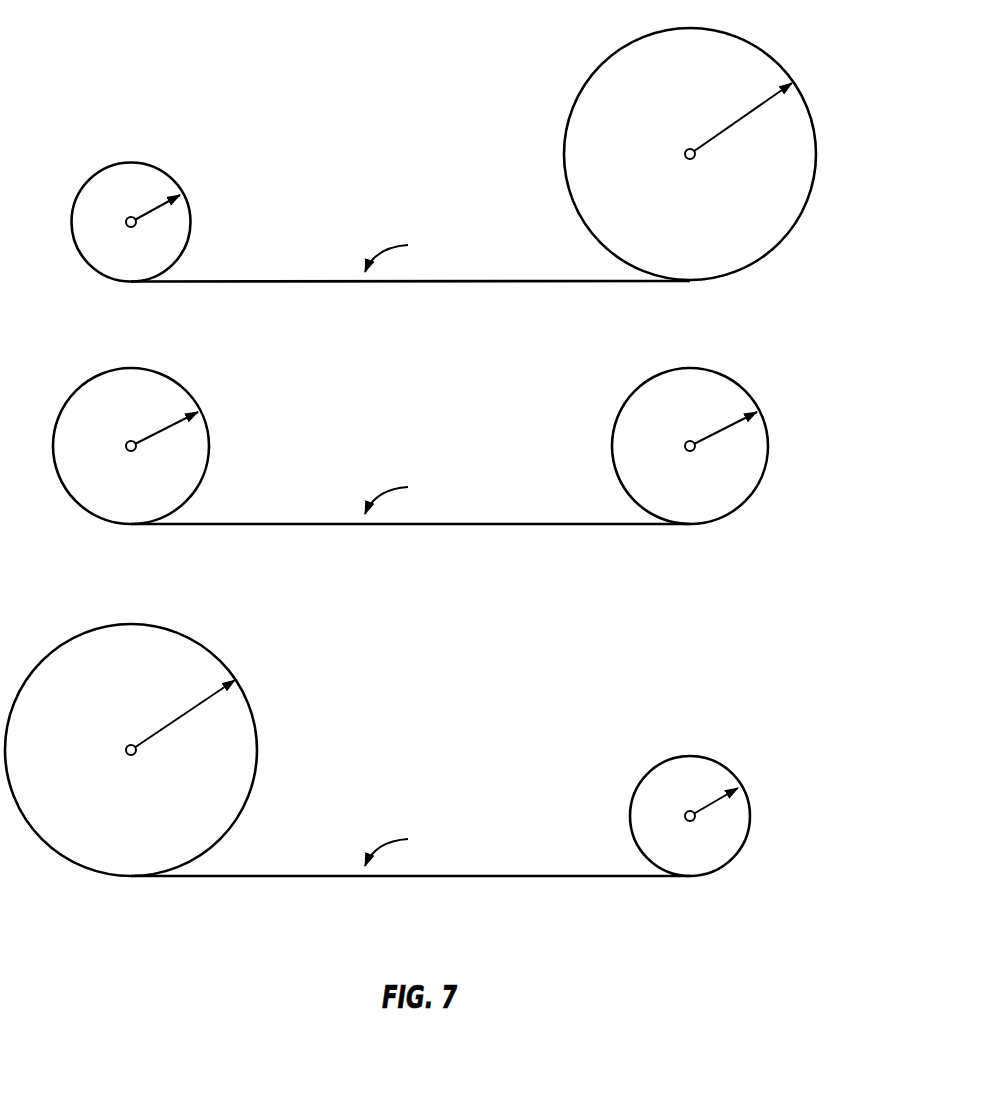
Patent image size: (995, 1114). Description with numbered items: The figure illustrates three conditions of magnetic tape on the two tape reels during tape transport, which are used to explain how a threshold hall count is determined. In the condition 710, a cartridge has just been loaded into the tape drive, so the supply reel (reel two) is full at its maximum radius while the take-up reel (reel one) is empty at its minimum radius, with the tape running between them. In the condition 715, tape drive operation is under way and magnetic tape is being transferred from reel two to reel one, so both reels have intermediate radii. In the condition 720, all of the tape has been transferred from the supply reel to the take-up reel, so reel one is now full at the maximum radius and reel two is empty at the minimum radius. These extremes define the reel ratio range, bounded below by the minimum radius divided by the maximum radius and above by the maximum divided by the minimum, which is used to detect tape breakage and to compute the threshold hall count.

The condition 710 is at (819, 155).
The condition 715 is at (770, 446).
The condition 720 is at (751, 817).